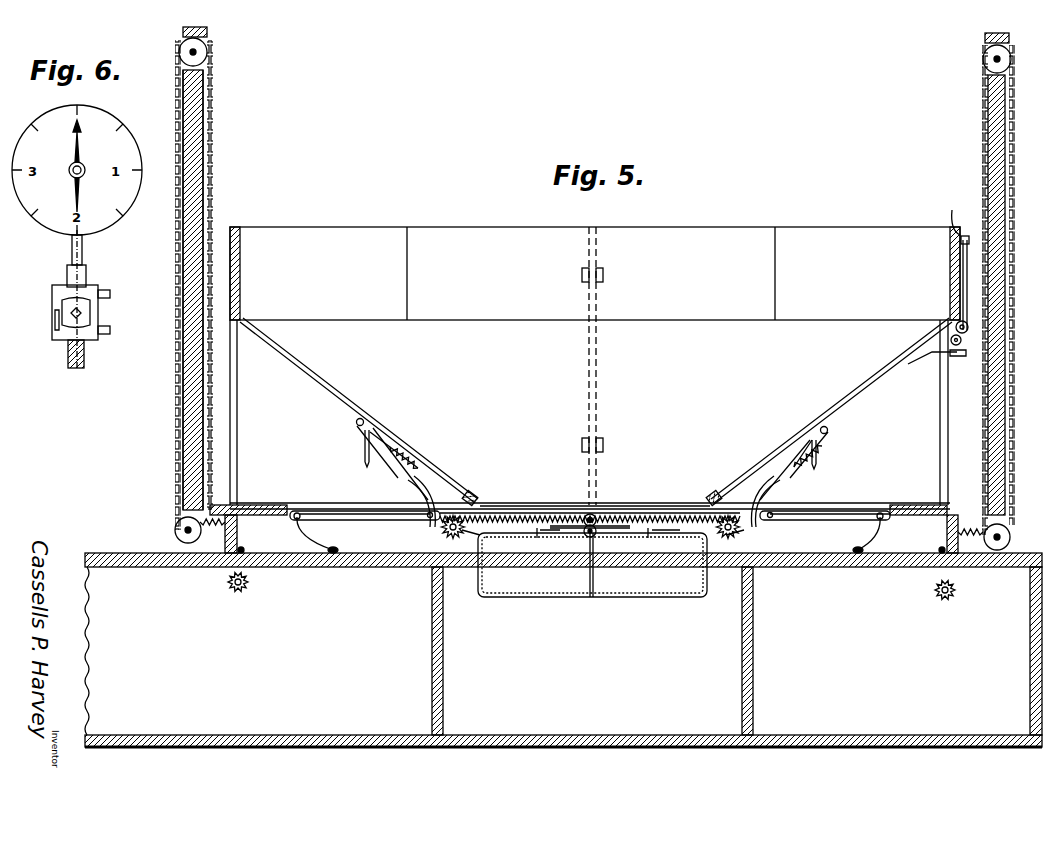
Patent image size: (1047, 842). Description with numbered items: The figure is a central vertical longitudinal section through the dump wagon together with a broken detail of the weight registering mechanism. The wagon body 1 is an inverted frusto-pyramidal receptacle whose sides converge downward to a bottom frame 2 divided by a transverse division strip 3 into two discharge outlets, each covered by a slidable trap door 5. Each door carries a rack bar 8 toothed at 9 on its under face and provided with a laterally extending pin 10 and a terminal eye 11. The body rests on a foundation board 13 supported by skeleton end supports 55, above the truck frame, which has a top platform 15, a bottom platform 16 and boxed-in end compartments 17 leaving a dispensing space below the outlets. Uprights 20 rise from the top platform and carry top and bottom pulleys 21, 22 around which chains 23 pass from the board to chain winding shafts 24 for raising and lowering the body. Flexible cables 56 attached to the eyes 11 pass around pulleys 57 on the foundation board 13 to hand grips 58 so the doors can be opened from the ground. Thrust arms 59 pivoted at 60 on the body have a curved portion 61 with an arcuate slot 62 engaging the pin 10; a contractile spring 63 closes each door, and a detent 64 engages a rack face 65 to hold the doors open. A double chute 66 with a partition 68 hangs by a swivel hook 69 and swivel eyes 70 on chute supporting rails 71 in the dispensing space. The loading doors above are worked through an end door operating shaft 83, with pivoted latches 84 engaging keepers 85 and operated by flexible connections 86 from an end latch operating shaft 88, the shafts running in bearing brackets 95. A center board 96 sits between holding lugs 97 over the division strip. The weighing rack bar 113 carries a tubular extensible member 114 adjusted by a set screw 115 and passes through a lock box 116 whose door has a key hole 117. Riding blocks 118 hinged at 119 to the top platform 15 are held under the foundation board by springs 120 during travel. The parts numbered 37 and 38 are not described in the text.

In FIG. 5, the wagon body 1 is at (875, 383).
In FIG. 5, the bottom frame 2 is at (512, 506).
In FIG. 5, the division strip 3 is at (592, 516).
In FIG. 5, the slidable trap doors 5 is at (540, 512).
In FIG. 5, the rack bar 8 is at (551, 515).
In FIG. 5, the rack teeth 9 is at (550, 528).
In FIG. 5, the laterally extending pin 10 is at (438, 504).
In FIG. 5, the terminal eye 11 is at (407, 516).
In FIG. 5, the foundation board 13 is at (282, 505).
In FIG. 5, the top platform 15 is at (388, 567).
In FIG. 5, the bottom platform 16 is at (660, 730).
In FIG. 5, the boxed-in compartment 17 is at (264, 651).
In FIG. 5, the end uprights or standards 20 is at (203, 185).
In FIG. 5, the top pulleys 21 is at (207, 52).
In FIG. 5, the bottom pulleys 22 is at (175, 528).
In FIG. 5, the flexible connections 23 is at (176, 462).
In FIG. 5, the chain winding shafts 24 is at (230, 588).
In FIG. 5, the gear 37 is at (453, 537).
In FIG. 5, the gear arm 38 is at (467, 530).
In FIG. 5, the skeleton end supports 55 is at (284, 367).
In FIG. 5, the flexible cables 56 is at (340, 511).
In FIG. 5, the pulleys 57 is at (302, 515).
In FIG. 5, the terminal hand grips 58 is at (333, 550).
In FIG. 5, the thrust arms 59 is at (390, 448).
In FIG. 5, the pivot 60 is at (356, 421).
In FIG. 5, the curved portion 61 is at (392, 477).
In FIG. 5, the arcuate slot 62 is at (411, 484).
In FIG. 5, the contractile spring 63 is at (408, 461).
In FIG. 5, the detent 64 is at (362, 446).
In FIG. 5, the rack face 65 is at (394, 441).
In FIG. 5, the double chute 66 is at (616, 597).
In FIG. 5, the partition 68 is at (590, 576).
In FIG. 5, the swivel hook 69 is at (595, 520).
In FIG. 5, the swivel eyes 70 is at (537, 538).
In FIG. 5, the chute supporting rails 71 is at (676, 530).
In FIG. 5, the end door operating shaft 83 is at (956, 327).
In FIG. 5, the pivoted latches 84 is at (961, 234).
In FIG. 5, the keepers 85 is at (969, 240).
In FIG. 5, the flexible connections 86 is at (967, 277).
In FIG. 5, the end latch operating shaft 88 is at (958, 356).
In FIG. 5, the bearing bracket 95 is at (930, 357).
In FIG. 5, the center board 96 is at (588, 360).
In FIG. 5, the holding lugs 97 is at (582, 275).
In FIG. 6, the rack bar 113 is at (72, 250).
In FIG. 6, the tubular extensible member 114 is at (86, 272).
In FIG. 6, the set screw 115 is at (81, 313).
In FIG. 6, the lock box 116 is at (106, 328).
In FIG. 6, the key hole 117 is at (59, 340).
In FIG. 5, the riding blocks 118 is at (237, 532).
In FIG. 5, the hinge 119 is at (244, 552).
In FIG. 5, the springs 120 is at (216, 516).